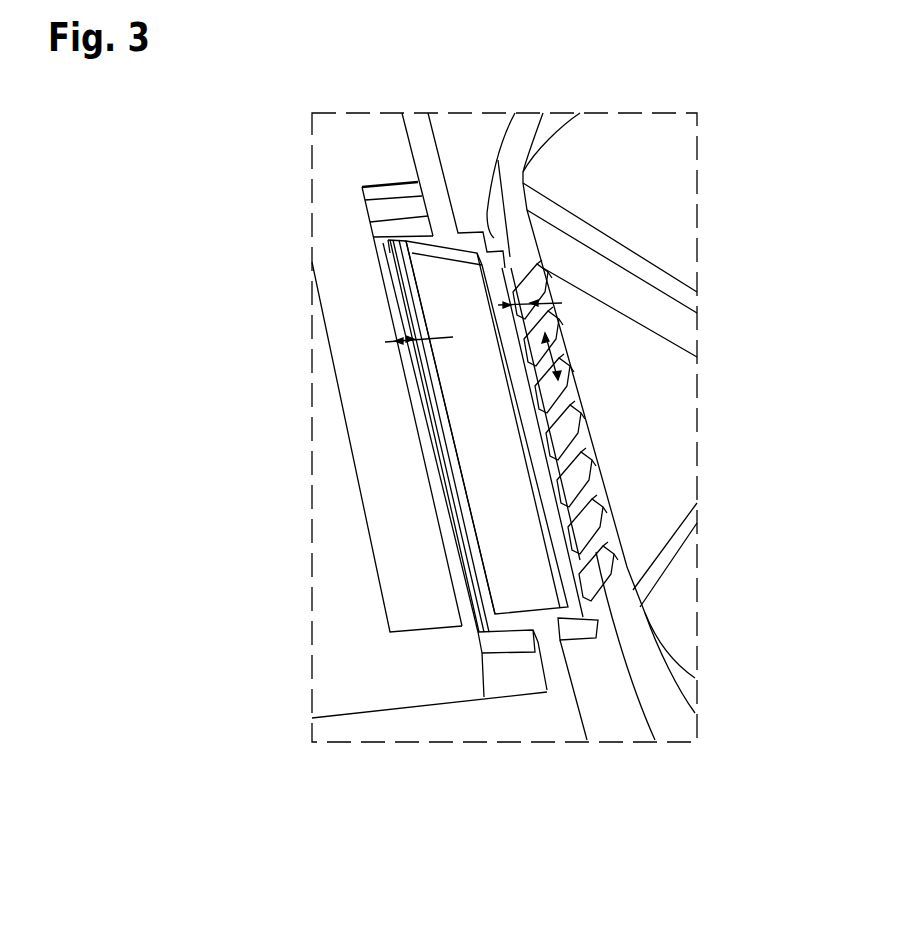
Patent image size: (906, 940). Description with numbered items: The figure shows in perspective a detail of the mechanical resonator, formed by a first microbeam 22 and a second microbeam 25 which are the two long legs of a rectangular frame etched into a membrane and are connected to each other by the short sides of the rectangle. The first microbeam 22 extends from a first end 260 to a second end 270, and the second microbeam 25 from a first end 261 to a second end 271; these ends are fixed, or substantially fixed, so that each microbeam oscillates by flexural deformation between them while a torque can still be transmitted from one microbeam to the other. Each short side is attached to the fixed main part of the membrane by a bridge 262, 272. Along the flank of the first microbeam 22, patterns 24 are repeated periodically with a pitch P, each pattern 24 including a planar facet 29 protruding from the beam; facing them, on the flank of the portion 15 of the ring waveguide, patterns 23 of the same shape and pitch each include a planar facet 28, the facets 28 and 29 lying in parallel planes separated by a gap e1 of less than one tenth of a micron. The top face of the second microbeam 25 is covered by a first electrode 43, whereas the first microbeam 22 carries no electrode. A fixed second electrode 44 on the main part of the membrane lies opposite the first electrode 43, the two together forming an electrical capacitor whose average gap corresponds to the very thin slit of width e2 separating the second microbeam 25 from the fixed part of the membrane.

The portion of the ring waveguide 15 is at (585, 398).
The first microbeam 22 is at (530, 432).
The patterns of the first arm 23 is at (578, 472).
The patterns of the second arm 24 is at (562, 497).
The second microbeam 25 is at (442, 415).
The planar facet 28 is at (518, 280).
The planar facet 29 is at (510, 313).
The first electrode 43 is at (430, 407).
The fixed second electrode 44 is at (405, 542).
The first end of the first microbeam 260 is at (472, 233).
The first end of the second microbeam 261 is at (392, 249).
The bridge 262 is at (412, 210).
The second end of the first microbeam 270 is at (583, 618).
The second end of the second microbeam 271 is at (495, 627).
The bridge 272 is at (552, 665).
The gap e1 is at (544, 308).
The slit width e2 is at (425, 328).
The pitch P is at (555, 356).